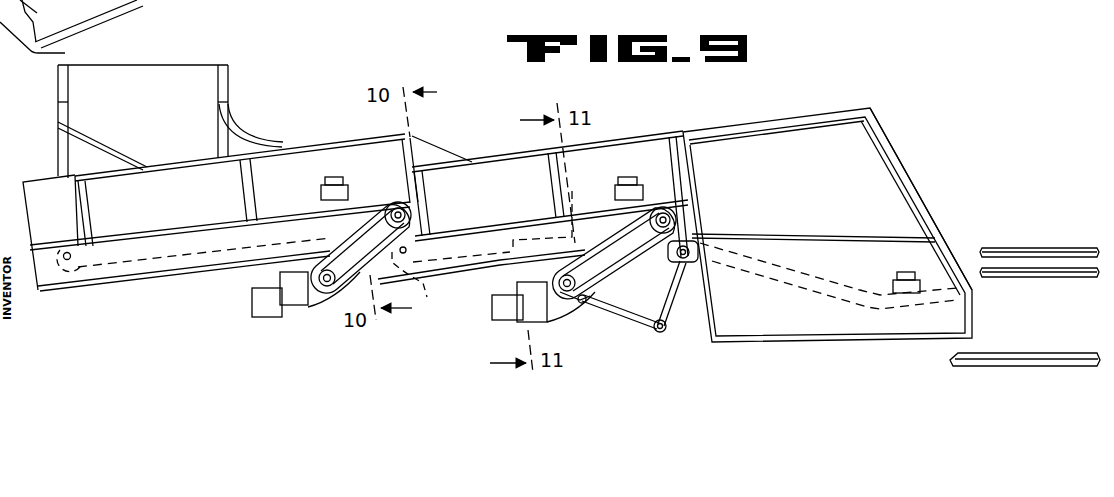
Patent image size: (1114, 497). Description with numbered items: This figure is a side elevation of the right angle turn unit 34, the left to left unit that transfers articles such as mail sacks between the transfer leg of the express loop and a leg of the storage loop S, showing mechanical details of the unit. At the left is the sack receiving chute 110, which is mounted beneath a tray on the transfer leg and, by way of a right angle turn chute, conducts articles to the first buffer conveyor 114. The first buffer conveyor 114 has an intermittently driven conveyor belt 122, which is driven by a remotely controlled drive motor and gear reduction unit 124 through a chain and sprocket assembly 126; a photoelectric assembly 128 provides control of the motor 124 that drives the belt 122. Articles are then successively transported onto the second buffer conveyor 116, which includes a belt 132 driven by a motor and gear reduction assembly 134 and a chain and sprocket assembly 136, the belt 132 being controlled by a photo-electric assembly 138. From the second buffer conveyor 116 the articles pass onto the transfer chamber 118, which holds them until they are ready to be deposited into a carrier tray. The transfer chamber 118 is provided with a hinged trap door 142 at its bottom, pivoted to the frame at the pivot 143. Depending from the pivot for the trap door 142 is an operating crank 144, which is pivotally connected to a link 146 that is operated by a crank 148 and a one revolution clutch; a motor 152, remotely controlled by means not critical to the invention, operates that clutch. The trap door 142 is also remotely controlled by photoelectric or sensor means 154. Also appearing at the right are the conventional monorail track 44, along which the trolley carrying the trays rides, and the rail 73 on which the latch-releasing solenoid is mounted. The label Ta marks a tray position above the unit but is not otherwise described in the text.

The sack receiving chute 110 is at (150, 104).
The photoelectric assembly 128 is at (320, 188).
The chain and sprocket assembly 126 is at (352, 232).
The first buffer conveyor 114 is at (177, 257).
The conveyor belt 122 is at (93, 268).
The drive motor and gear reduction unit 124 is at (300, 312).
The second buffer conveyor 116 is at (496, 262).
The belt 132 is at (430, 288).
The motor and gear reduction assembly 134 is at (527, 302).
The photo-electric assembly 138 is at (628, 178).
The chain and sprocket assembly 136 is at (617, 237).
The motor 152 is at (585, 295).
The crank 148 is at (583, 304).
The link 146 is at (630, 320).
The operating crank 144 is at (672, 312).
The pivot 143 is at (693, 242).
The hinged trap door 142 is at (787, 272).
The photoelectric or sensor means 154 is at (893, 283).
The right angle turn unit 34 is at (812, 105).
The transfer chamber 118 is at (918, 170).
The storage loop S is at (1027, 246).
The monorail track 44 is at (1069, 248).
The rail 73 is at (1032, 352).
The tray Ta is at (278, 120).